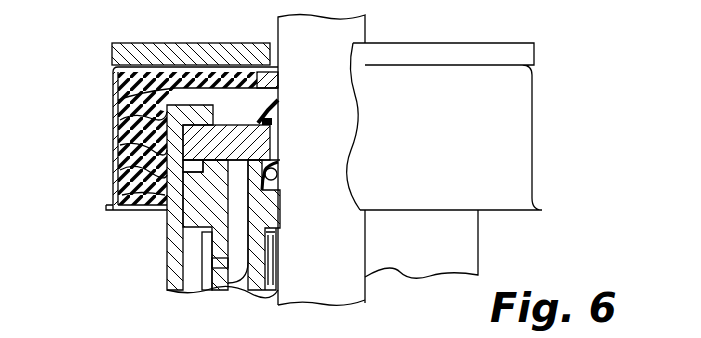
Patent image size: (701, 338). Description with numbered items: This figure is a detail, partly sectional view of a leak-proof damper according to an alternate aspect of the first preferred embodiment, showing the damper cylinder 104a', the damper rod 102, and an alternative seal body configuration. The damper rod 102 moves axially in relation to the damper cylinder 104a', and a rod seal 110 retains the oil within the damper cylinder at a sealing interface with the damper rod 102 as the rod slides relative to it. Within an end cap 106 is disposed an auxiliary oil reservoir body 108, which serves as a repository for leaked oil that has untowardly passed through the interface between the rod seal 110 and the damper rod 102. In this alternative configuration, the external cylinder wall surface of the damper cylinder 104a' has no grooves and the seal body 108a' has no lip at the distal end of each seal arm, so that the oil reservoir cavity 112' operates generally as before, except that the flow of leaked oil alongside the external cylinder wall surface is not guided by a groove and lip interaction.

The damper rod 102 is at (367, 33).
The end cap 106 is at (112, 81).
The auxiliary oil reservoir body 108 is at (141, 138).
The seal body 108a' is at (141, 138).
The rod seal 110 is at (278, 120).
The oil reservoir cavity 112' is at (116, 114).
The damper cylinder 104a' is at (184, 206).